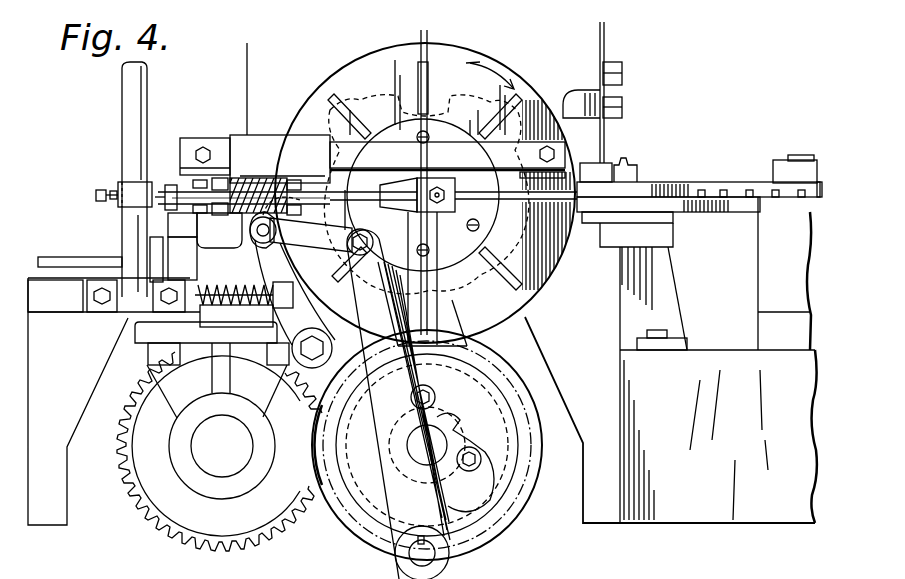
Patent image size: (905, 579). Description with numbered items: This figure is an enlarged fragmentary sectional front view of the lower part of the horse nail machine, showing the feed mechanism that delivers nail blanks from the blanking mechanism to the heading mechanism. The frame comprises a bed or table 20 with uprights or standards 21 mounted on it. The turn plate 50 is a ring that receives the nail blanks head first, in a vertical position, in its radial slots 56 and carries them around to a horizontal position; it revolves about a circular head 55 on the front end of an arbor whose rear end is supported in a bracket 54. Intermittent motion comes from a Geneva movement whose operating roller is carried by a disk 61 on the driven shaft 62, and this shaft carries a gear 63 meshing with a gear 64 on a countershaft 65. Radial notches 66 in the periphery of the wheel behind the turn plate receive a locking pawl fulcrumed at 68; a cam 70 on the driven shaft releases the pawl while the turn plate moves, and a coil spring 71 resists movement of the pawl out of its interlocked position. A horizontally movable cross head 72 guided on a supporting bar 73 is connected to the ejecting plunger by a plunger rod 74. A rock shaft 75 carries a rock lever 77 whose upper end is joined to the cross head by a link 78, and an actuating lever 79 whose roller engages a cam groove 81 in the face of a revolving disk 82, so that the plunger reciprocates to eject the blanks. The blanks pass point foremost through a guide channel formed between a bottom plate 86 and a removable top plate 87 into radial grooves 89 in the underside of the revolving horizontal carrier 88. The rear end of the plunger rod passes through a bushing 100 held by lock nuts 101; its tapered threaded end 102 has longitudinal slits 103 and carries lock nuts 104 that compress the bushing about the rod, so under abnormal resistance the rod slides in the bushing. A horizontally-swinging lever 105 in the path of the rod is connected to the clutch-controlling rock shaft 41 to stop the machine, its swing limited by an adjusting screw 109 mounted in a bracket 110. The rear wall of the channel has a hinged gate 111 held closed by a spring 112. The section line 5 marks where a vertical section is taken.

The section line 5 is at (424, 173).
The bed or table 20 is at (671, 360).
The uprights or standards 21 is at (583, 92).
The rock shaft 41 is at (146, 108).
The turn plate 50 is at (455, 318).
The bracket 54 is at (479, 215).
The circular head 55 is at (423, 195).
The slots 56 is at (500, 275).
The disk 61 is at (276, 246).
The driven shaft 62 is at (432, 443).
The gear 63 is at (515, 488).
The gear 64 is at (138, 506).
The countershaft 65 is at (222, 446).
The radial notches 66 is at (356, 103).
The pawl fulcrum 68 is at (310, 346).
The cam 70 is at (458, 420).
The coil spring 71 is at (223, 303).
The cross head 72 is at (300, 128).
The supporting bar 73 is at (447, 160).
The plunger rod 74 is at (453, 259).
The rock shaft 75 is at (432, 555).
The rock lever 77 is at (398, 404).
The link 78 is at (301, 232).
The actuating lever 79 is at (452, 500).
The cam groove 81 is at (350, 496).
The revolving disk 82 is at (427, 445).
The bottom plate 86 is at (660, 212).
The top plate 87 is at (650, 186).
The revolving horizontal carrier 88 is at (725, 186).
The radial grooves 89 is at (726, 200).
The bushing 100 is at (244, 184).
The lock nuts 101 is at (222, 178).
The tapered threaded end 102 is at (198, 212).
The longitudinal slits 103 is at (190, 175).
The lock nuts 104 is at (202, 214).
The horizontally-swinging lever 105 is at (170, 186).
The adjusting screw 109 is at (172, 212).
The bracket 110 is at (130, 232).
The gate 111 is at (632, 176).
The spring 112 is at (632, 160).